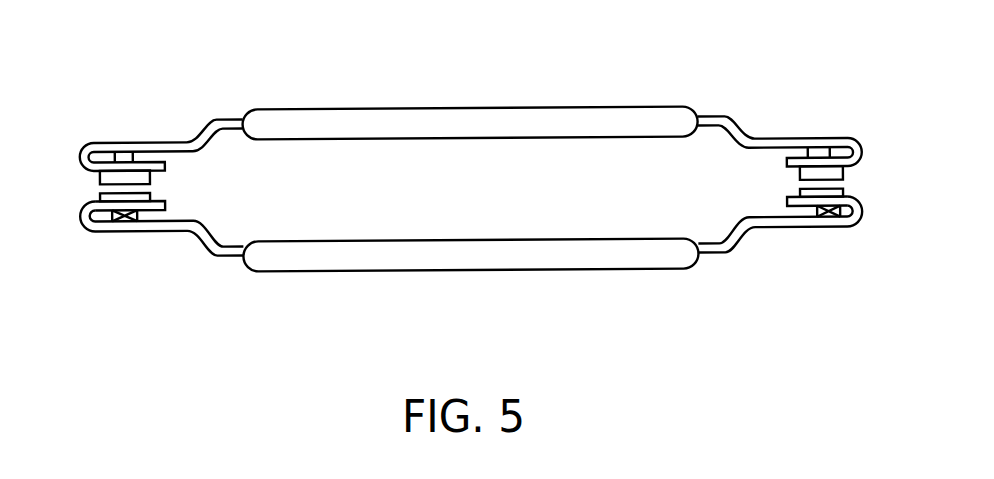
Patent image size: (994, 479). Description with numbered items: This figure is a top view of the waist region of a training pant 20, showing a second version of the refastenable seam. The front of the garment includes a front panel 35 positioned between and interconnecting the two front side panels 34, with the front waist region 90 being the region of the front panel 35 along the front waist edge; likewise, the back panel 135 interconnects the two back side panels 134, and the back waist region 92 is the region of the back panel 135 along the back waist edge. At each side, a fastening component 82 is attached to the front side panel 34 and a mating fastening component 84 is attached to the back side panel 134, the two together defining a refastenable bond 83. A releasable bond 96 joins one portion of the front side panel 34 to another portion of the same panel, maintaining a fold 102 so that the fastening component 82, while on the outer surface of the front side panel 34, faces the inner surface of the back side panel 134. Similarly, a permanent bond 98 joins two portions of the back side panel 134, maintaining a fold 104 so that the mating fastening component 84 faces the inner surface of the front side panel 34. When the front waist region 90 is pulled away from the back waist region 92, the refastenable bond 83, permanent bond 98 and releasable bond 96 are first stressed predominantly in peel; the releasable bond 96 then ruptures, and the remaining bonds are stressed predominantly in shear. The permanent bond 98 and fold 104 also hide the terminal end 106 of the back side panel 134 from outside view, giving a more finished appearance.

The training pant 20 is at (577, 93).
The front side panel 34 is at (221, 116).
The front panel 35 is at (644, 119).
The fastening component 82 is at (99, 176).
The refastenable bond 83 is at (148, 189).
The mating fastening component 84 is at (97, 195).
The front waist region 90 is at (337, 122).
The back waist region 92 is at (343, 259).
The releasable bond 96 is at (118, 158).
The permanent bond 98 is at (122, 214).
The fold 102 is at (81, 150).
The fold 104 is at (82, 213).
The terminal end 106 is at (166, 206).
The back side panel 134 is at (216, 256).
The back panel 135 is at (644, 256).